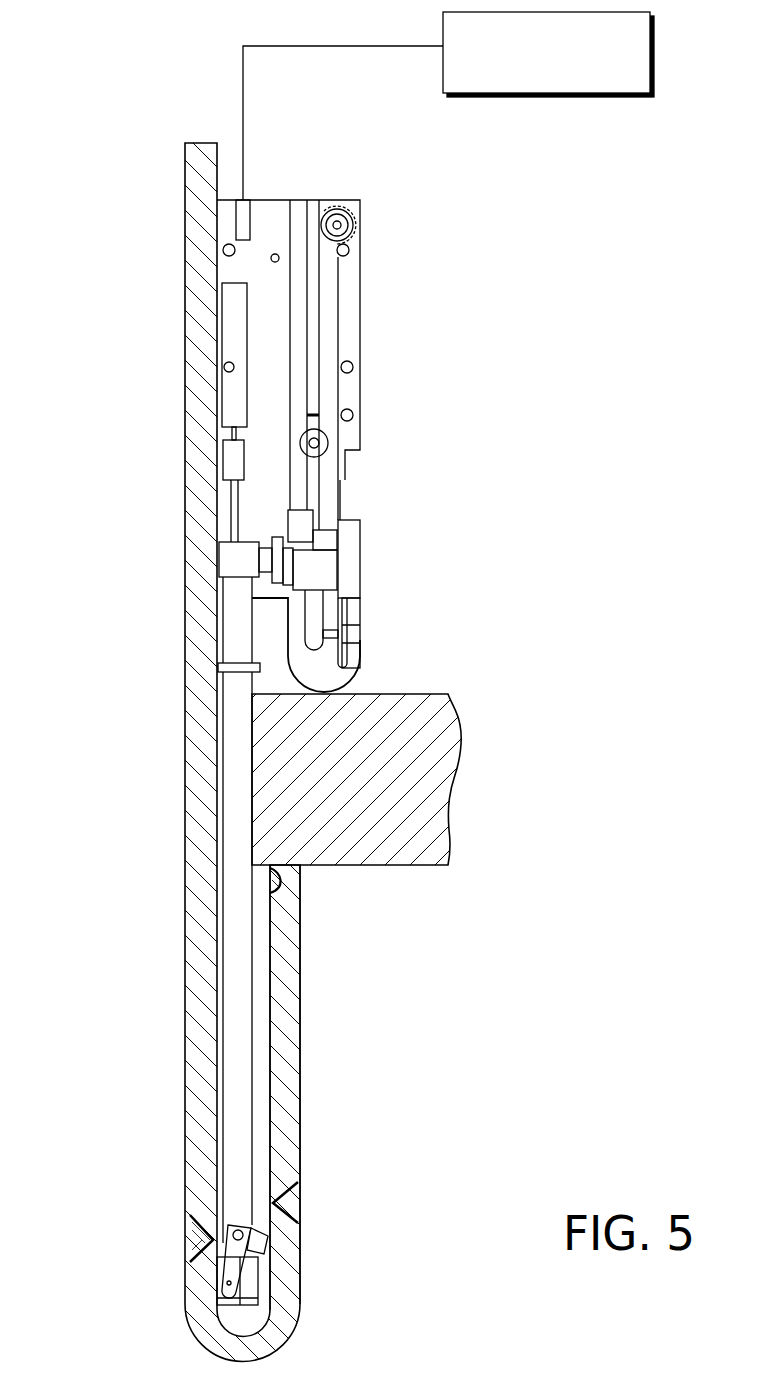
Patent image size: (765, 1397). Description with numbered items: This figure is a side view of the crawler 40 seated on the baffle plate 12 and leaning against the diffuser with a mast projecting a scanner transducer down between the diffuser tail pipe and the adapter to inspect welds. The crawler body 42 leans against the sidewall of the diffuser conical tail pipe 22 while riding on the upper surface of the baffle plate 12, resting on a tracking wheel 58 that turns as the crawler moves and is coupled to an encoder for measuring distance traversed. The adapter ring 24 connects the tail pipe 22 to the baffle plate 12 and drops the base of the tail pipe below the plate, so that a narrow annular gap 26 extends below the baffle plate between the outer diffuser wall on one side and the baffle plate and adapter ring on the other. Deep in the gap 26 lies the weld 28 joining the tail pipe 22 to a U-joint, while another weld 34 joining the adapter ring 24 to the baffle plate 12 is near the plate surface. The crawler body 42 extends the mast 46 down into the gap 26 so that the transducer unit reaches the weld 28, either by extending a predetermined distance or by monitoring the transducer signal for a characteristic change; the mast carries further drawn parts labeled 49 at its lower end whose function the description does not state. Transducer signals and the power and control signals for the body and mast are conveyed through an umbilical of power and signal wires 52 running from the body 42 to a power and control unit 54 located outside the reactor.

The baffle plate 12 is at (408, 765).
The diffuser conical tail pipe 22 is at (185, 285).
The adapter ring 24 is at (290, 1105).
The annular gap 26 is at (260, 1063).
The weld 28 is at (185, 1237).
The weld 34 is at (284, 883).
The crawler 40 is at (273, 191).
The crawler body 42 is at (362, 228).
The mast 46 is at (252, 1165).
The latch base 49 is at (252, 1287).
The wire 52 is at (243, 76).
The power and control unit 54 is at (553, 95).
The tracking wheel 58 is at (342, 678).